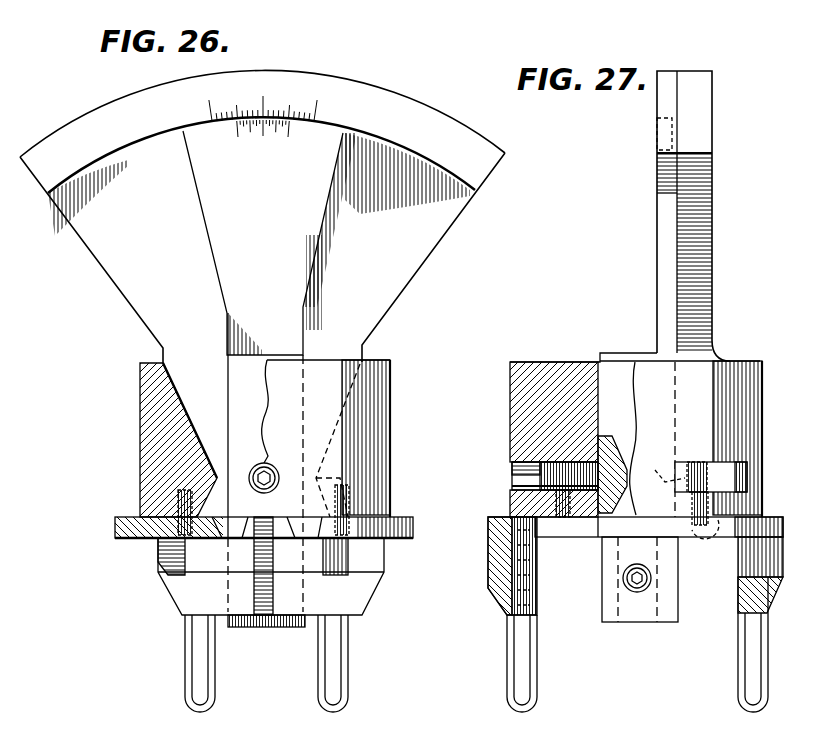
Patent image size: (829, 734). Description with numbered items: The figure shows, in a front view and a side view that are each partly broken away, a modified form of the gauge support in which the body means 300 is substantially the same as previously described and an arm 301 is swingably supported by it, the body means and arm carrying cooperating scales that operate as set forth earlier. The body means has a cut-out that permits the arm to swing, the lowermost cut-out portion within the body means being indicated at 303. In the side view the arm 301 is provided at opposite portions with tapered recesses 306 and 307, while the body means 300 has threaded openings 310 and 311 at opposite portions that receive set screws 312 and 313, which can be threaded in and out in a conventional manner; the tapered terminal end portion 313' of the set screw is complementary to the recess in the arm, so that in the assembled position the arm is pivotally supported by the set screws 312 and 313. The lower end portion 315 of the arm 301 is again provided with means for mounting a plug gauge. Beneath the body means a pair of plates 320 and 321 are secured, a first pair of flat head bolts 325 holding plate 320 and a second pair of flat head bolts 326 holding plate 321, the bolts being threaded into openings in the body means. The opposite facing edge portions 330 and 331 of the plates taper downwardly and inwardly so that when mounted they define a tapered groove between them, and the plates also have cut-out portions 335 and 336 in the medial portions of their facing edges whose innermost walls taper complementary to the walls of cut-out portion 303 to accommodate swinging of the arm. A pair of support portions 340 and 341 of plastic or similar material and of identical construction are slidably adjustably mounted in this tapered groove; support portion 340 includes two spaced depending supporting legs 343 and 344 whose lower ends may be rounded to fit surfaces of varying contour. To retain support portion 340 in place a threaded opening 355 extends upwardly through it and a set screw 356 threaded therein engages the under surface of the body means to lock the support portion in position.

In FIG. 26, the body means 300 is at (407, 362).
In FIG. 27, the body means 300 is at (508, 400).
In FIG. 26, the arm 301 is at (200, 240).
In FIG. 27, the arm 301 is at (655, 293).
In FIG. 26, the lowermost cut-out portion 303 is at (216, 490).
In FIG. 27, the tapered recess 306 is at (622, 450).
In FIG. 27, the tapered recess 307 is at (680, 463).
In FIG. 27, the threaded opening 310 is at (512, 467).
In FIG. 27, the threaded opening 311 is at (746, 467).
In FIG. 27, the set screw 312 is at (540, 483).
In FIG. 27, the set screw 313 is at (742, 479).
In FIG. 27, the terminal end portion 313' is at (654, 468).
In FIG. 27, the lower end portion 315 is at (665, 622).
In FIG. 26, the plate 320 is at (115, 530).
In FIG. 27, the plate 320 is at (548, 732).
In FIG. 26, the plate 321 is at (404, 521).
In FIG. 27, the plate 321 is at (638, 733).
In FIG. 26, the flat head bolts 325 is at (152, 538).
In FIG. 26, the flat head bolts 326 is at (350, 522).
In FIG. 27, the flat head bolts 326 is at (556, 530).
In FIG. 26, the facing edge portion 330 is at (246, 518).
In FIG. 27, the facing edge portion 330 is at (583, 732).
In FIG. 26, the facing edge portion 331 is at (284, 521).
In FIG. 26, the cut-out portion 335 is at (187, 561).
In FIG. 26, the cut-out portion 336 is at (278, 550).
In FIG. 26, the support portion 340 is at (176, 605).
In FIG. 27, the support portion 340 is at (501, 601).
In FIG. 27, the support portion 341 is at (770, 599).
In FIG. 26, the supporting leg 343 is at (215, 688).
In FIG. 26, the supporting leg 344 is at (350, 688).
In FIG. 27, the threaded opening 355 is at (537, 607).
In FIG. 26, the set screw 356 is at (276, 620).
In FIG. 27, the set screw 356 is at (490, 560).